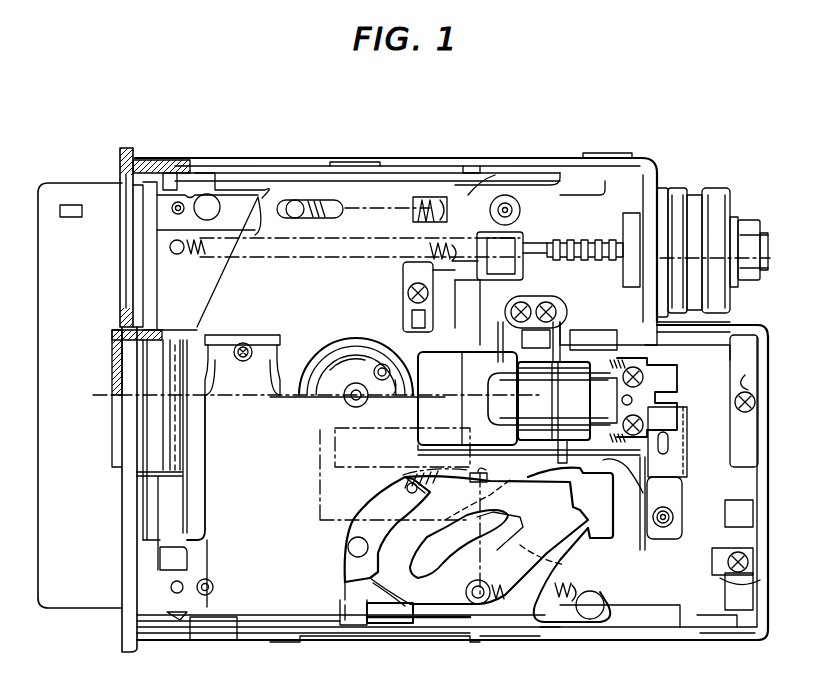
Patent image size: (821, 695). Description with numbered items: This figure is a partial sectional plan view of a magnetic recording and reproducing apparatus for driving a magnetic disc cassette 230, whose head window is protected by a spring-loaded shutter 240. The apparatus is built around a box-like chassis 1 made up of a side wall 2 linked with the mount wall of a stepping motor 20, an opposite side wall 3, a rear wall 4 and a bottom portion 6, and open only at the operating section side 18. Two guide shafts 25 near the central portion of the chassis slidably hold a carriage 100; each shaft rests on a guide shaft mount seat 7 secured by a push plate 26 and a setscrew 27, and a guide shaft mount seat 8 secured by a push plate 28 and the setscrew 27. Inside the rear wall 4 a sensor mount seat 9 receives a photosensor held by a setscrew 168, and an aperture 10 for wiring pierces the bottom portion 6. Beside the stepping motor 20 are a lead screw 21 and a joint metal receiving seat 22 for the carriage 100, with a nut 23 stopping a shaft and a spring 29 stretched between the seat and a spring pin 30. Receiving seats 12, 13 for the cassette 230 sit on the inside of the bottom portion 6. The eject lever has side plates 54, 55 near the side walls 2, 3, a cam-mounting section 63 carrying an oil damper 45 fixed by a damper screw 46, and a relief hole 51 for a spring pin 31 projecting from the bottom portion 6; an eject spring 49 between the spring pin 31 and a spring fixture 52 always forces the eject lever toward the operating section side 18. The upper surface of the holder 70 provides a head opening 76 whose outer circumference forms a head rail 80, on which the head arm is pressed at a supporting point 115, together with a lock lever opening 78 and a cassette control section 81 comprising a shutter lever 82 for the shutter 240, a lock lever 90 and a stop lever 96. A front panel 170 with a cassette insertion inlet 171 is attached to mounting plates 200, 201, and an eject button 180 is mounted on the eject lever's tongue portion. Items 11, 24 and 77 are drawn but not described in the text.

The chassis 1 is at (657, 166).
The side wall 2 is at (430, 160).
The side wall 3 is at (606, 643).
The rear wall 4 is at (760, 575).
The bottom portion 6 is at (766, 633).
The guide shaft mount seat 7 is at (758, 337).
The guide shaft mount seat 8 is at (403, 328).
The sensor mount seat 9 is at (725, 580).
The aperture 10 is at (650, 641).
The gear 11 is at (345, 342).
The receiving seat 12 is at (512, 206).
The receiving seat 13 is at (207, 205).
The operating section side 18 is at (112, 444).
The stepping motor 20 is at (732, 200).
The lead screw 21 is at (600, 243).
The joint metal receiving seat 22 is at (540, 243).
The nut 23 is at (505, 196).
The slot 24 is at (567, 312).
The guide shaft 25 is at (705, 358).
The push plate 26 is at (755, 382).
The setscrew 27 is at (430, 296).
The push plate 28 is at (405, 292).
The spring 29 is at (197, 256).
The spring pin 30 is at (170, 247).
The spring pin 31 is at (297, 203).
The oil damper 45 is at (270, 372).
The damper screw 46 is at (243, 335).
The eject spring 49 is at (425, 200).
The relief hole 51 is at (292, 200).
The spring fixture 52 is at (468, 198).
The side plate 54 is at (455, 250).
The side plate 55 is at (350, 628).
The cam-mounting section 63 is at (262, 342).
The holder 70 is at (620, 568).
The head opening 76 is at (418, 452).
The lever 77 is at (518, 532).
The lock lever opening 78 is at (590, 500).
The head rail 80 is at (652, 498).
The cassette control section 81 is at (486, 606).
The shutter lever 82 is at (572, 620).
The lock lever 90 is at (385, 625).
The stop lever 96 is at (347, 548).
The carriage 100 is at (690, 438).
The supporting point 115 is at (560, 462).
The setscrew 168 is at (750, 560).
The front panel 170 is at (120, 158).
The cassette insertion inlet 171 is at (135, 226).
The eject button 180 is at (112, 340).
The mounting plate 200 is at (285, 642).
The mounting plate 201 is at (600, 156).
The magnetic disc cassette 230 is at (72, 608).
The shutter 240 is at (320, 510).